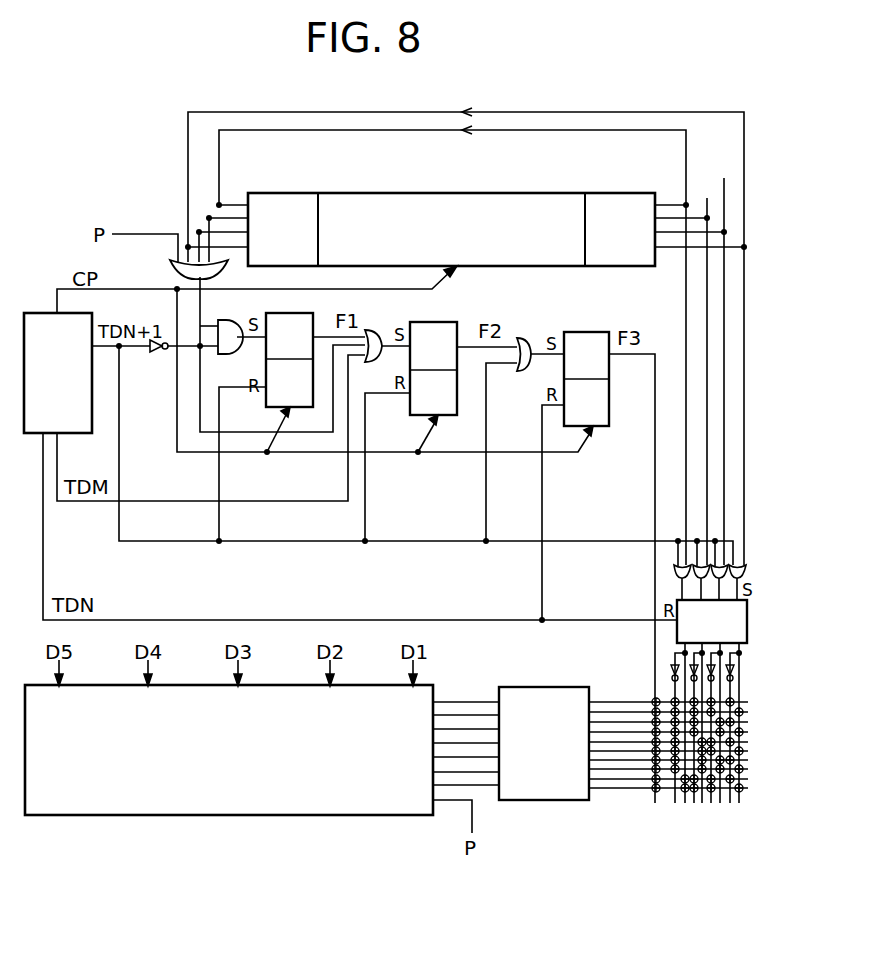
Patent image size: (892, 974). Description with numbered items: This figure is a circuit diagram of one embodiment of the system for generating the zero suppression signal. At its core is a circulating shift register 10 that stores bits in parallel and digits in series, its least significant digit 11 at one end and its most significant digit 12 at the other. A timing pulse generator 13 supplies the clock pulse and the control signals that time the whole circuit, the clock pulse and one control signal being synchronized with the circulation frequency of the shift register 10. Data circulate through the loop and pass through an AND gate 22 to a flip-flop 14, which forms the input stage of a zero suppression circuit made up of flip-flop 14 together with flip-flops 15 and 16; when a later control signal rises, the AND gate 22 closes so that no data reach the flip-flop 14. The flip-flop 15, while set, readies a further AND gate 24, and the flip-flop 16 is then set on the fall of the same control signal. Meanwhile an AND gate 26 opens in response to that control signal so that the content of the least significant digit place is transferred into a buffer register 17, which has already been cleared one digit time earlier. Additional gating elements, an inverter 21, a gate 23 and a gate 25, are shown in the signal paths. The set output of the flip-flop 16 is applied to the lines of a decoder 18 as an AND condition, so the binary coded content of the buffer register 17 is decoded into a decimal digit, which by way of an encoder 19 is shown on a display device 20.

The circulating shift register 10 is at (506, 193).
The least significant digit 11 is at (620, 193).
The most significant digit 12 is at (289, 193).
The timing pulse generator 13 is at (40, 313).
The flip-flop 14 is at (305, 313).
The flip-flop 15 is at (457, 322).
The flip-flop 16 is at (609, 332).
The buffer register 17 is at (747, 627).
The decoder 18 is at (749, 714).
The encoder 19 is at (558, 687).
The display device 20 is at (433, 685).
The inverter 21 is at (156, 353).
The AND gate 22 is at (228, 320).
The OR gate 23 is at (382, 330).
The AND gate 24 is at (530, 338).
The OR gate 25 is at (172, 268).
The AND gate 26 is at (747, 574).